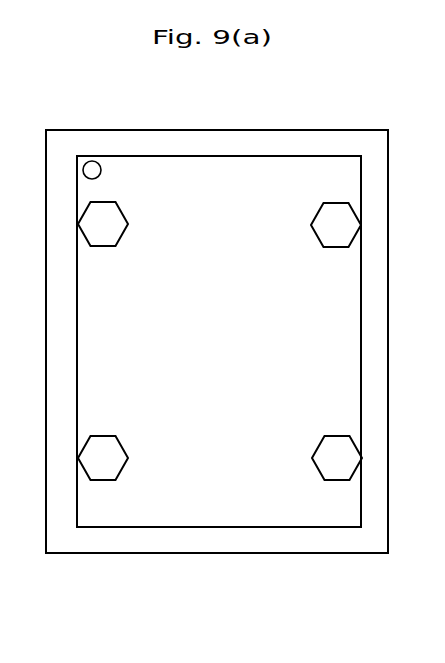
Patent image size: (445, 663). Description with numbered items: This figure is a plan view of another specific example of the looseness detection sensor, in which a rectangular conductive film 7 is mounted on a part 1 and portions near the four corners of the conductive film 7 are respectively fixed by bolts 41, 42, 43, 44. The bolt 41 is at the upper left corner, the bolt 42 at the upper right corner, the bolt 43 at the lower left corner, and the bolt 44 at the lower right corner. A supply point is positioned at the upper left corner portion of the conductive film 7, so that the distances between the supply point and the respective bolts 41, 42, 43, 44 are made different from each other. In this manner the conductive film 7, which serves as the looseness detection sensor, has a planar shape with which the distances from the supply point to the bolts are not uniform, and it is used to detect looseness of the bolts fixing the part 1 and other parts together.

The part 1 is at (232, 538).
The conductive film 7 is at (190, 158).
The bolt 41 is at (104, 213).
The bolt 42 is at (338, 213).
The bolt 43 is at (102, 471).
The bolt 44 is at (333, 471).